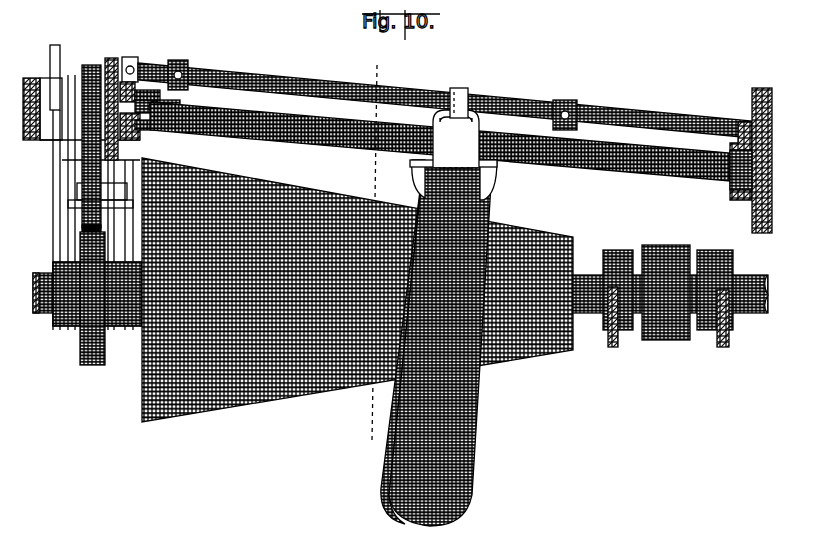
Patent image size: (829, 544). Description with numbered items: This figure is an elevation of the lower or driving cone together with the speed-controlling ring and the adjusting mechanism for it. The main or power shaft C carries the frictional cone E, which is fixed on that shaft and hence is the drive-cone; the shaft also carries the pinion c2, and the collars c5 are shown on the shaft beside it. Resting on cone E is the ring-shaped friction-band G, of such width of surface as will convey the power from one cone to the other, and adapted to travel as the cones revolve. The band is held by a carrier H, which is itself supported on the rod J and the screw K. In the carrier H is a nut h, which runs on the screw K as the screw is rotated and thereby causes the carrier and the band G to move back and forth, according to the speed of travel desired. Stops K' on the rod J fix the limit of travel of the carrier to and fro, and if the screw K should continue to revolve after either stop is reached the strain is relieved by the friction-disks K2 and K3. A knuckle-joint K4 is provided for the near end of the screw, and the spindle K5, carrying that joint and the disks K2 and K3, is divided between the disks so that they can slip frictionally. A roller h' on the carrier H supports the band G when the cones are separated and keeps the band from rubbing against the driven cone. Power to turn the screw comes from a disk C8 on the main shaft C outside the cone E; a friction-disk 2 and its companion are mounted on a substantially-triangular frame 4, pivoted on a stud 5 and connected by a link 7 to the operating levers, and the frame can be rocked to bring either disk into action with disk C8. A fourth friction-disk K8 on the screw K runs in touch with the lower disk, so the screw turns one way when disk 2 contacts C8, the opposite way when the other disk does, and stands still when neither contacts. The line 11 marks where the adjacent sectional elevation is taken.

The friction-disk K8 is at (89, 63).
The friction-disk K2 is at (111, 57).
The friction-disk K3 is at (119, 68).
The knuckle-joint K4 is at (151, 95).
The stops K' is at (445, 92).
The spindle K5 is at (136, 133).
The screw K is at (440, 141).
The link 7 is at (50, 58).
The stud 5 is at (24, 107).
The frame 4 is at (80, 145).
The friction-disk 2 is at (82, 214).
The disk C8 is at (81, 348).
The section line 11 is at (371, 250).
The rod J is at (432, 112).
The roller h' is at (456, 89).
The nut h is at (465, 121).
The carrier H is at (481, 126).
The cone E is at (545, 352).
The friction-band G is at (467, 442).
The collar c5 is at (611, 346).
The pinion c2 is at (666, 341).
The main shaft C is at (677, 294).